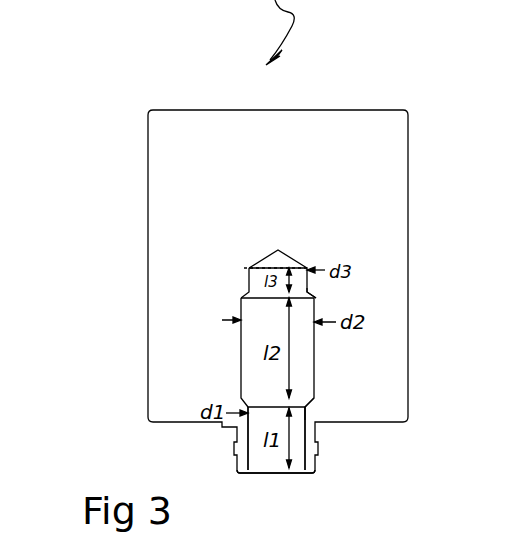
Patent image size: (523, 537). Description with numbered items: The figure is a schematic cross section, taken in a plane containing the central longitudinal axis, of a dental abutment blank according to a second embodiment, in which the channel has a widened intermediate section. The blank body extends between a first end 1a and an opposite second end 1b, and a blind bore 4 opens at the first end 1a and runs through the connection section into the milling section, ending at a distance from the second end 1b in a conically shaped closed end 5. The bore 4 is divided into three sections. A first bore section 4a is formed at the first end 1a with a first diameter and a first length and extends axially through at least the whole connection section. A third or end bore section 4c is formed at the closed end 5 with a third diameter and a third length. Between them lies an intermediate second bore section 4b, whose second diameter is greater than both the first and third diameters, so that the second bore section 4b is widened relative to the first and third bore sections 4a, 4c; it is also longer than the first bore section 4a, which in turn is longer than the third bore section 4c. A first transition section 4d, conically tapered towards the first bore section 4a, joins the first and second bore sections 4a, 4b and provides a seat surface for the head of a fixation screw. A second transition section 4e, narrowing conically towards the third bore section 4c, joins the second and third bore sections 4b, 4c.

The first end 1a is at (305, 471).
The second end 1b is at (360, 110).
The bore 4 is at (261, 471).
The first bore section 4a is at (248, 437).
The second bore section 4b is at (239, 347).
The third bore section 4c is at (249, 272).
The first transition section 4d is at (305, 413).
The second transition section 4e is at (310, 291).
The closed end 5 is at (298, 257).